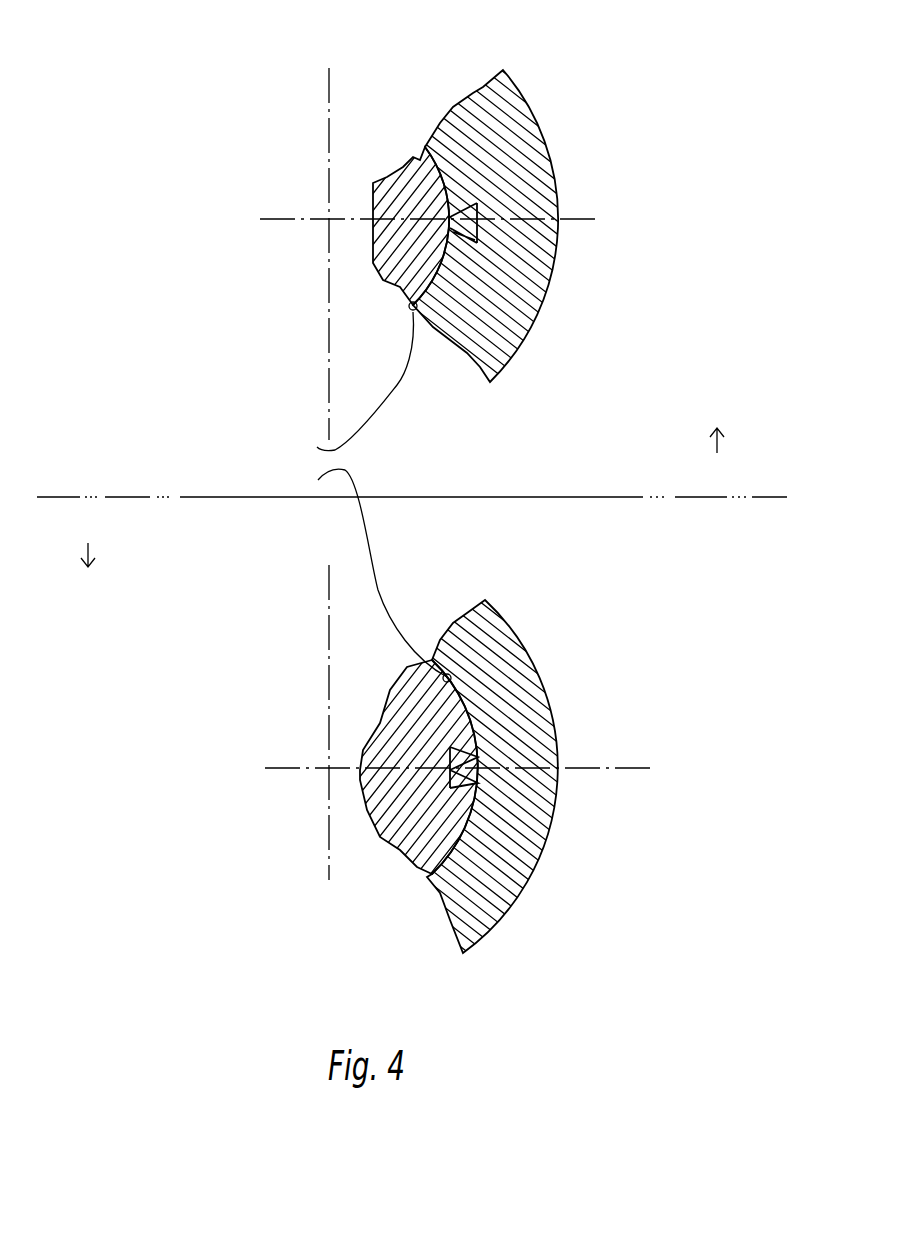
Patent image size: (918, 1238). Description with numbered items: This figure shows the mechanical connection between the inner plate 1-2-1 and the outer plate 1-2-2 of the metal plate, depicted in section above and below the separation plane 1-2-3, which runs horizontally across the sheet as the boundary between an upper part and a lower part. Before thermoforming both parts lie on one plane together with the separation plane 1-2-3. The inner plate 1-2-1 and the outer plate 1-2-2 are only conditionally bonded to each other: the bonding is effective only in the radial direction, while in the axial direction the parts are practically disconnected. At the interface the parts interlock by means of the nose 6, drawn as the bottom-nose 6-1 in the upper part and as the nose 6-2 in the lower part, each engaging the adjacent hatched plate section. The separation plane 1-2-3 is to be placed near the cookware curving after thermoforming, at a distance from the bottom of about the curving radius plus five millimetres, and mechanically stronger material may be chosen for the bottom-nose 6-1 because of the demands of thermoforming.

The nose 6 is at (412, 534).
The inner plate 1-2-1 is at (393, 245).
The outer plate 1-2-2 is at (473, 120).
The separation plane 1-2-3 is at (412, 704).
The bottom-nose 6-1 is at (470, 218).
The lower notch 6-2 is at (463, 767).